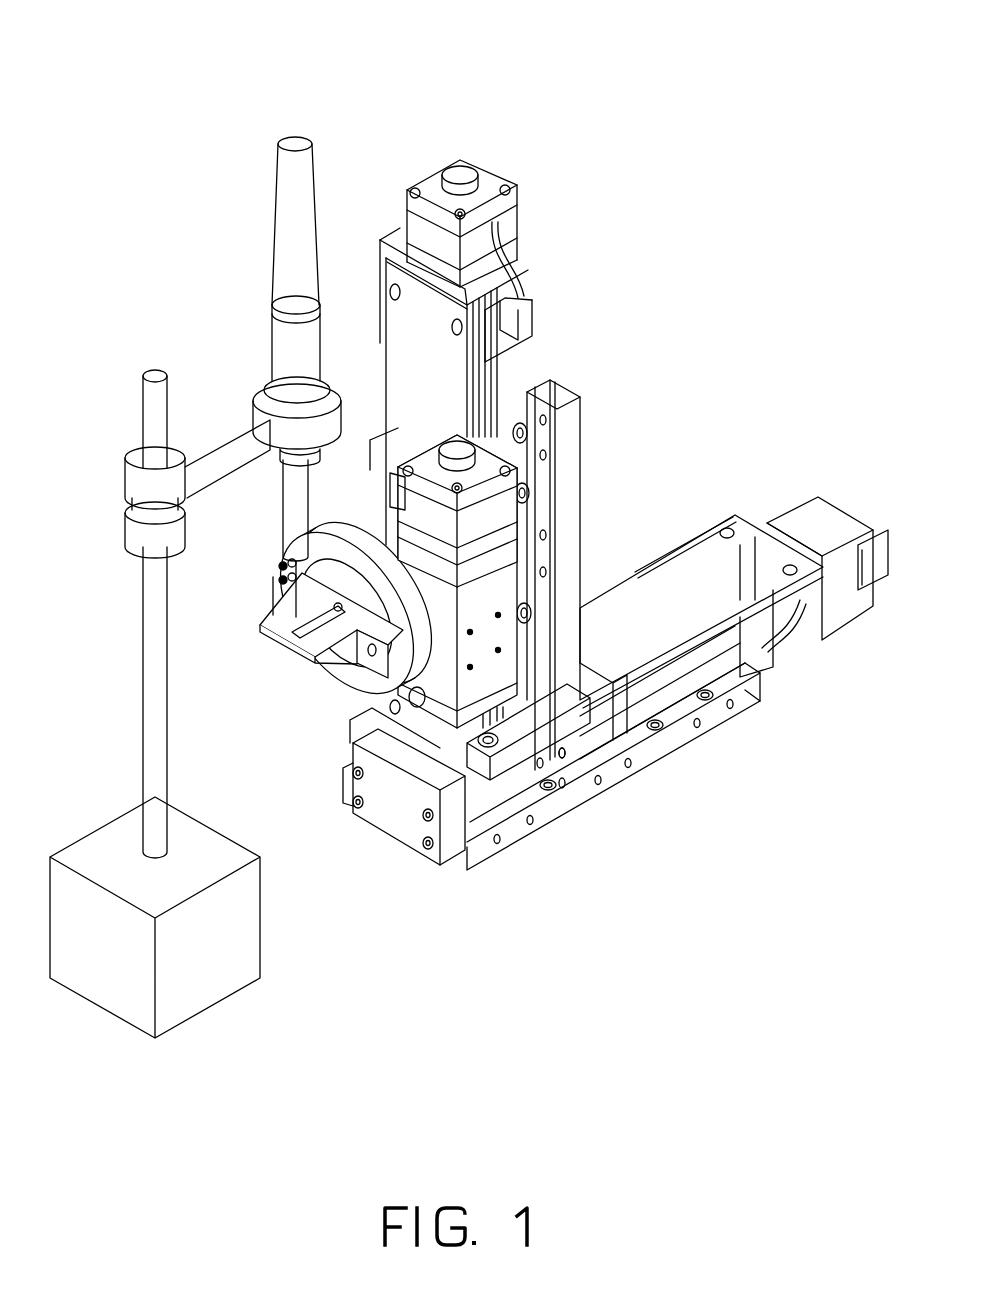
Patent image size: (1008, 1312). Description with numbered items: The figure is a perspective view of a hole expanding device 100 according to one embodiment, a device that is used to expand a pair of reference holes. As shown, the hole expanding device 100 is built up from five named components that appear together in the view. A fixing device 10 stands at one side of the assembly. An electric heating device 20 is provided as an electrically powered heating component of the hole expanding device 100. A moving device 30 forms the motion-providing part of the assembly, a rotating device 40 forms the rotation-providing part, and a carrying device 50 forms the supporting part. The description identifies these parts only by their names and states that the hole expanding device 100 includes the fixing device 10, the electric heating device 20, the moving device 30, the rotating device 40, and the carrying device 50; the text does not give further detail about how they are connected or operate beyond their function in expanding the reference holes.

The hole expanding device 100 is at (436, 45).
The fixing device 10 is at (148, 540).
The electric heating device 20 is at (288, 350).
The moving device 30 is at (567, 718).
The rotating device 40 is at (358, 678).
The carrying device 50 is at (283, 623).